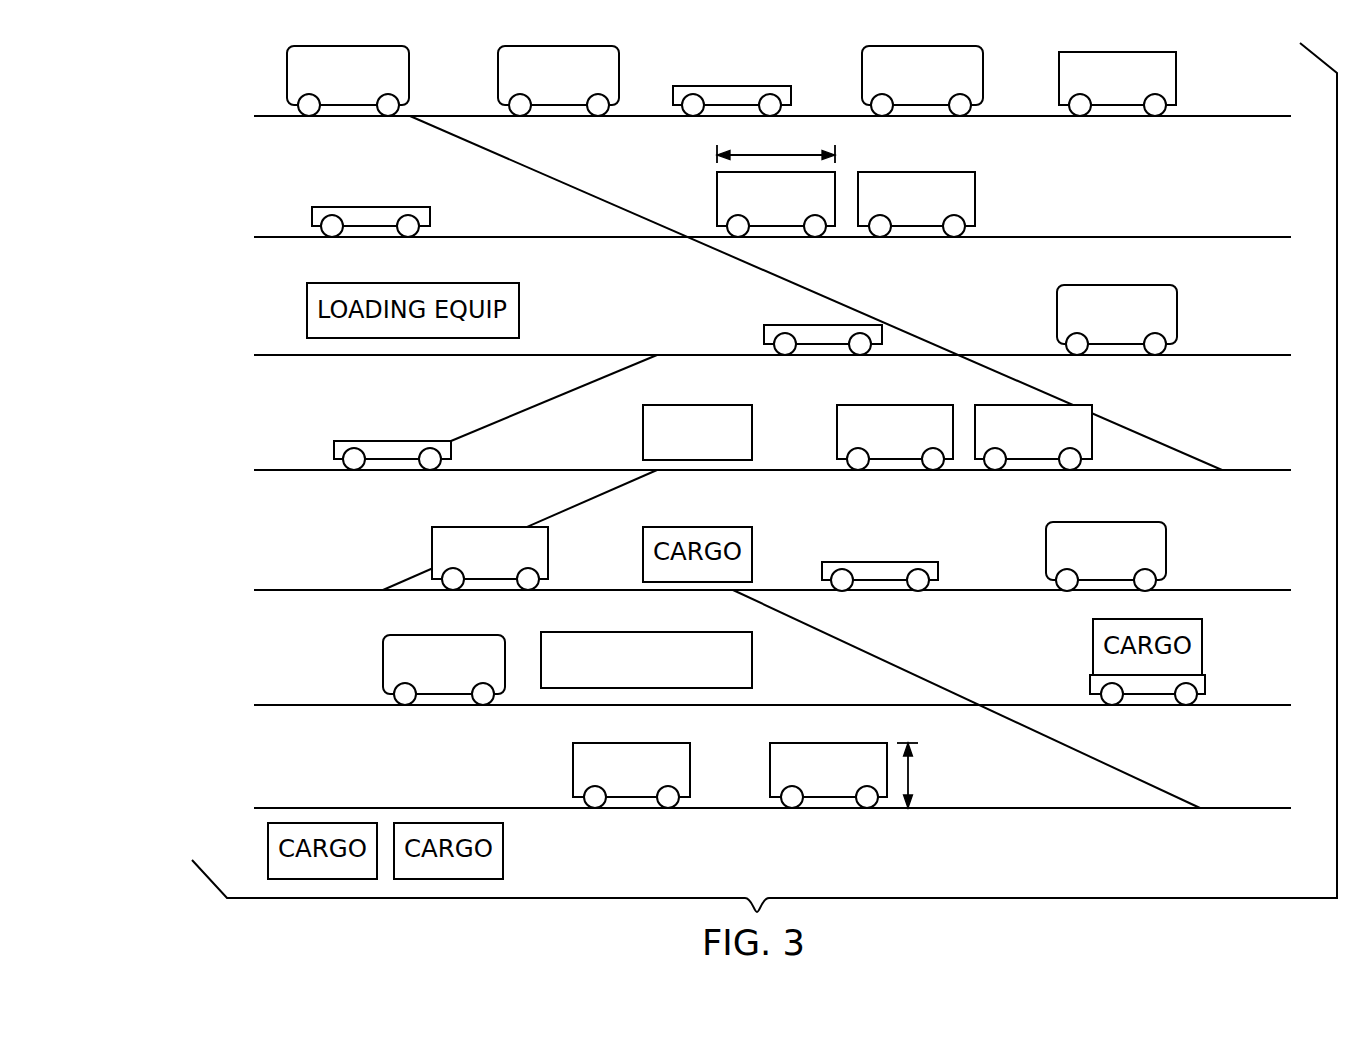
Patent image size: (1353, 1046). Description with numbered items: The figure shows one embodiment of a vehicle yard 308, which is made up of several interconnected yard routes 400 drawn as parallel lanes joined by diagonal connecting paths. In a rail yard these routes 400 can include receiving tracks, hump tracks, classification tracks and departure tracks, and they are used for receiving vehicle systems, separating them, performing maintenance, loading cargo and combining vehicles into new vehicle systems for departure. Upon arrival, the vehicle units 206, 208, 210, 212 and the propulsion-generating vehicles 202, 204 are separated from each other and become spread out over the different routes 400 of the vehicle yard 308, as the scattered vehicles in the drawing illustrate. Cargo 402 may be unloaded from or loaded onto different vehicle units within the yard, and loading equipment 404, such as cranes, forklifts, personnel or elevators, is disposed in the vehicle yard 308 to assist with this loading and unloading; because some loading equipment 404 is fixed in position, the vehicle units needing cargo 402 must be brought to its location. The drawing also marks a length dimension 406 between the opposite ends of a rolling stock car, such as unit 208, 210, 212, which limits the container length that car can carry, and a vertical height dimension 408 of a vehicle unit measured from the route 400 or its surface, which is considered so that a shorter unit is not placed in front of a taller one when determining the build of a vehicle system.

The vehicle yard 308 is at (176, 146).
The propulsion-generating vehicle 202 is at (862, 58).
The vehicle unit 206 is at (1176, 77).
The vehicle unit 212 is at (371, 207).
The length dimension 406 is at (780, 155).
The vehicle unit 208 is at (975, 198).
The yard route 400 is at (1228, 240).
The propulsion-generating vehicle 204 is at (1057, 315).
The cargo 402 is at (643, 432).
The vehicle unit 210 is at (432, 540).
The loading equipment 404 is at (752, 660).
The vertical height dimension 408 is at (911, 775).